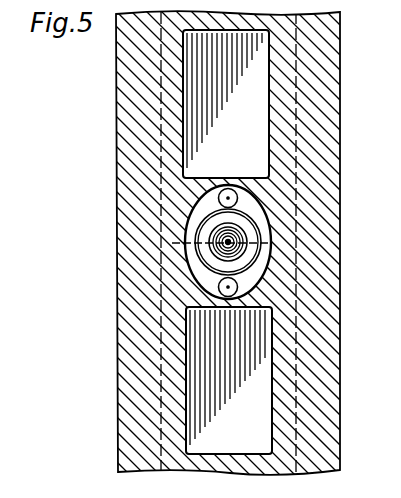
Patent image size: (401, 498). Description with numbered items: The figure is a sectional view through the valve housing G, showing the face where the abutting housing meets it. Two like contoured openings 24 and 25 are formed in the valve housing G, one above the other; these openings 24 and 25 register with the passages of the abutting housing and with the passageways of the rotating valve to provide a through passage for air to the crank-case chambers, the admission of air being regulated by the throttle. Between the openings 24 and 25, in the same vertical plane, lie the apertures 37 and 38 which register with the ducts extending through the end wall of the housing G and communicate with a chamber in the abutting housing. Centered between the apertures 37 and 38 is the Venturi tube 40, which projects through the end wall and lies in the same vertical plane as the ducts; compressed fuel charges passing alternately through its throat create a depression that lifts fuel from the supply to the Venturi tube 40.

The valve housing G is at (131, 270).
The contoured opening 24 is at (190, 112).
The contoured opening 25 is at (200, 374).
The aperture 37 is at (236, 203).
The aperture 38 is at (237, 291).
The Venturi tube 40 is at (232, 245).